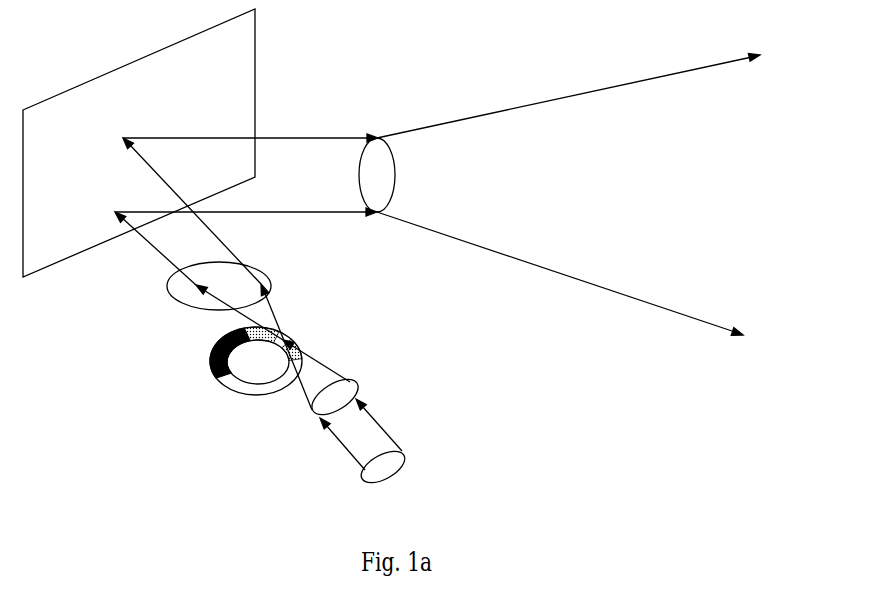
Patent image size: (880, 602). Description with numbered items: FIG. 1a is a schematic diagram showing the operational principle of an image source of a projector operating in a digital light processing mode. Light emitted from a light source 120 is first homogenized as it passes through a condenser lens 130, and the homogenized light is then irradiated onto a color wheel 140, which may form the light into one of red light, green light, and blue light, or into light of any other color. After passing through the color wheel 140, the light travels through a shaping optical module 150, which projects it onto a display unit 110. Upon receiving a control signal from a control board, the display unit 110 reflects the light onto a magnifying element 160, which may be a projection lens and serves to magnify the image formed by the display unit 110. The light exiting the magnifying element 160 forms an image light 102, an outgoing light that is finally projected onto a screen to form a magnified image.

The display unit 110 is at (139, 143).
The magnifying element 160 is at (382, 153).
The image light 102 is at (568, 194).
The shaping optical module 150 is at (199, 292).
The color wheel 140 is at (238, 365).
The condenser lens 130 is at (322, 406).
The light source 120 is at (374, 476).